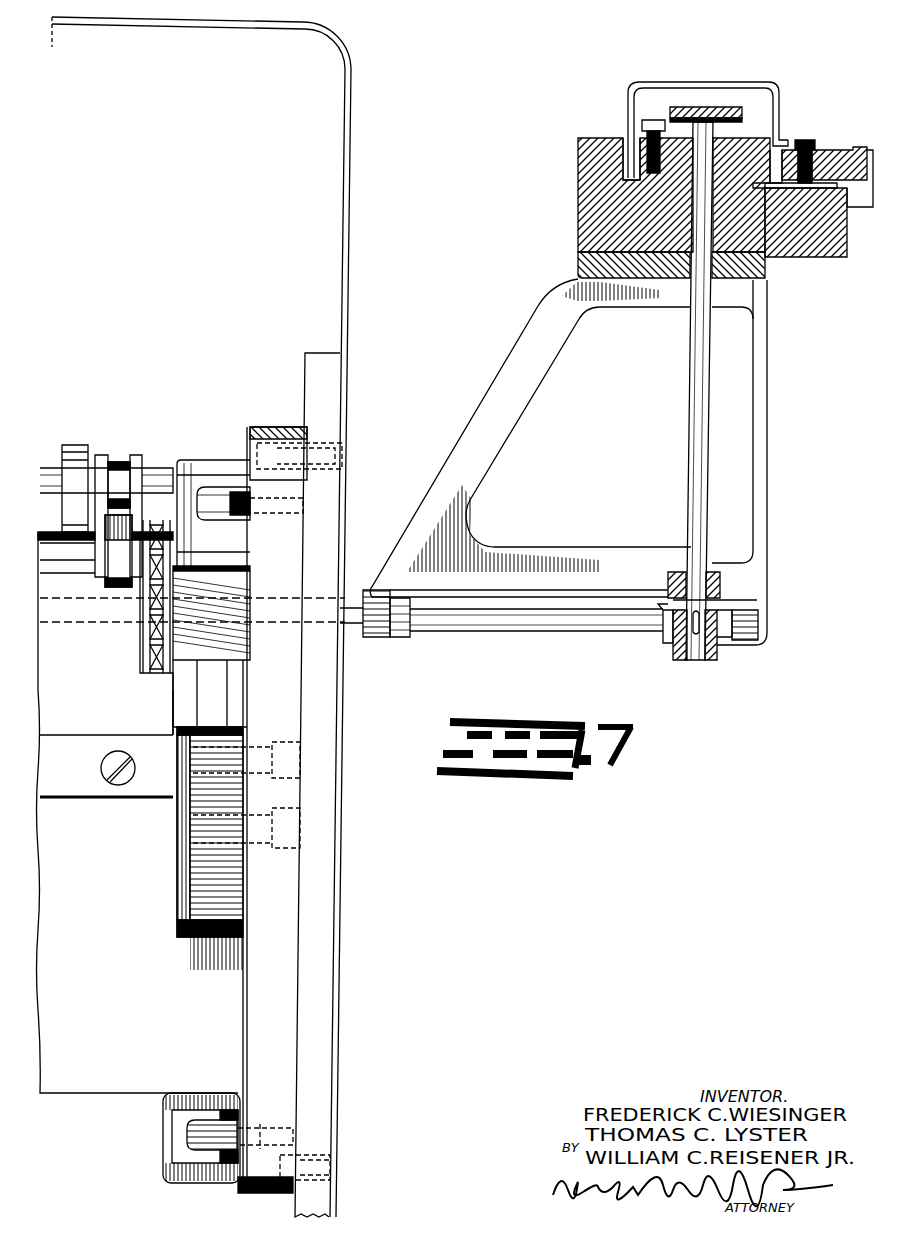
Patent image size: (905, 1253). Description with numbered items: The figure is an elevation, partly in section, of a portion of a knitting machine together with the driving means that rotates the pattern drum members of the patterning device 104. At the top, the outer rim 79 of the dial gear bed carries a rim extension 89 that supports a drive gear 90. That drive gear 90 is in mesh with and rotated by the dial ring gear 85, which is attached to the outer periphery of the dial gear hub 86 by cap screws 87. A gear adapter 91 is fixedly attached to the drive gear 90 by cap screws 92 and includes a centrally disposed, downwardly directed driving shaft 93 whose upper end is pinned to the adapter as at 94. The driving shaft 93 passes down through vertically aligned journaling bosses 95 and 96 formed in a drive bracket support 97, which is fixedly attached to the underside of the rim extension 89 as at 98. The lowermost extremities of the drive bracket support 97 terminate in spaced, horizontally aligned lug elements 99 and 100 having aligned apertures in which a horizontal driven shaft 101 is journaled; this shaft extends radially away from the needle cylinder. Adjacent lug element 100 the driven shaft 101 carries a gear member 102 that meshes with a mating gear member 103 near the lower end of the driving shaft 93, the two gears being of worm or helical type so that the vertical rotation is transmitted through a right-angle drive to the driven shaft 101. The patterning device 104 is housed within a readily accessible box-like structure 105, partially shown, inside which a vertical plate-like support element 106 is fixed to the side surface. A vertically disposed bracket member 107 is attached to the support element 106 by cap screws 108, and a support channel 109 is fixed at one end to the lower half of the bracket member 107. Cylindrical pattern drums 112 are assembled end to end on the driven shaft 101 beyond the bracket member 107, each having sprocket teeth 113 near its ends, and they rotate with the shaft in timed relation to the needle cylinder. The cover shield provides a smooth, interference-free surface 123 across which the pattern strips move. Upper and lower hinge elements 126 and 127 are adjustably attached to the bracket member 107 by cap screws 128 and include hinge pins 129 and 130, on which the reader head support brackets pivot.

The outer rim 79 is at (812, 238).
The dial ring gear 85 is at (793, 152).
The dial gear hub 86 is at (845, 157).
The cap screws 87 is at (807, 150).
The rim extension 89 is at (578, 225).
The drive gear 90 is at (630, 153).
The gear adapter 91 is at (733, 110).
The cap screws 92 is at (650, 120).
The driving shaft 93 is at (693, 487).
The pin 94 is at (702, 107).
The journaling boss 95 is at (690, 281).
The journaling boss 96 is at (668, 573).
The drive bracket support 97 is at (763, 511).
The attachment point 98 is at (578, 250).
The lug element 99 is at (384, 636).
The lug element 100 is at (758, 642).
The driven shaft 101 is at (468, 620).
The gear member 102 is at (657, 633).
The mating gear member 103 is at (718, 637).
The patterning device 104 is at (147, 446).
The box-like structure 105 is at (232, 23).
The support element 106 is at (315, 384).
The bracket member 107 is at (257, 1057).
The cap screws 108 is at (340, 465).
The support channel 109 is at (125, 948).
The pattern drums 112 is at (58, 604).
The sprocket teeth 113 is at (153, 632).
The interference-free surface 123 is at (222, 1113).
The upper hinge element 126 is at (197, 486).
The lower hinge element 127 is at (183, 1115).
The cap screws 128 is at (248, 520).
The hinge pin 129 is at (227, 460).
The hinge pin 130 is at (190, 1185).